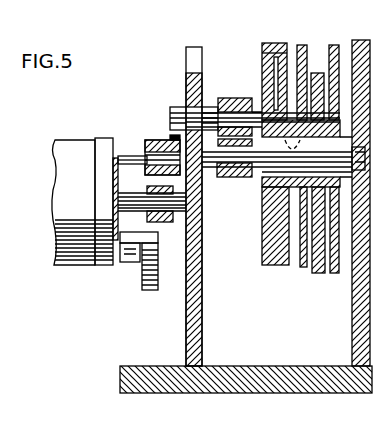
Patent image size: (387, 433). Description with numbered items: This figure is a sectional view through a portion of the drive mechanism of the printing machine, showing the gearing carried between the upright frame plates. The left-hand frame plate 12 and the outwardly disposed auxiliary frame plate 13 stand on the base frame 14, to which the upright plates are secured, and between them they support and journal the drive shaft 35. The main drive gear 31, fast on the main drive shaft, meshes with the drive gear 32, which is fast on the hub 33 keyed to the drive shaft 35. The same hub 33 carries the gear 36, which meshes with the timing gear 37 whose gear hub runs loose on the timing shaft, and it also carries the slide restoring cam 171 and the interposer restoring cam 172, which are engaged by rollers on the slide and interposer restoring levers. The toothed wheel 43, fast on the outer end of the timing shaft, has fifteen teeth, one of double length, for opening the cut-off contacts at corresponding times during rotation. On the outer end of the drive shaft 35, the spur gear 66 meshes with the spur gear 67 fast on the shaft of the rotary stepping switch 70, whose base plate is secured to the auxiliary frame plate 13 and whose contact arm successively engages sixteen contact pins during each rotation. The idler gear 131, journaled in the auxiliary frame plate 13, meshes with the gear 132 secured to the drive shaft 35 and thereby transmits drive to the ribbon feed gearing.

The left-hand frame plate 12 is at (352, 338).
The auxiliary frame plate 13 is at (204, 304).
The base frame 14 is at (140, 368).
The main drive gear 31 is at (272, 43).
The drive gear 32 is at (300, 45).
The hub 33 is at (262, 178).
The drive shaft 35 is at (208, 160).
The gear 36 is at (317, 73).
The timing gear 37 is at (318, 274).
The toothed wheel 43 is at (142, 275).
The spur gear 66 is at (157, 140).
The spur gear 67 is at (160, 222).
The rotary stepping switch 70 is at (68, 149).
The idler gear 131 is at (229, 97).
The gear 132 is at (229, 163).
The slide restoring cam 171 is at (336, 275).
The interposer restoring cam 172 is at (302, 268).